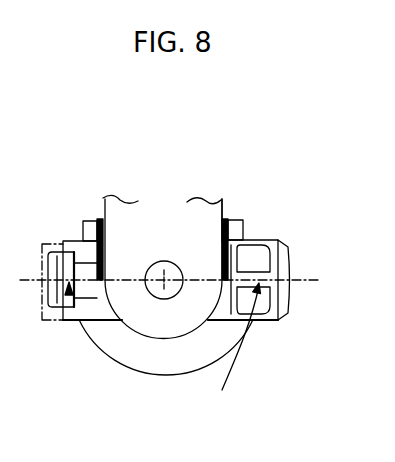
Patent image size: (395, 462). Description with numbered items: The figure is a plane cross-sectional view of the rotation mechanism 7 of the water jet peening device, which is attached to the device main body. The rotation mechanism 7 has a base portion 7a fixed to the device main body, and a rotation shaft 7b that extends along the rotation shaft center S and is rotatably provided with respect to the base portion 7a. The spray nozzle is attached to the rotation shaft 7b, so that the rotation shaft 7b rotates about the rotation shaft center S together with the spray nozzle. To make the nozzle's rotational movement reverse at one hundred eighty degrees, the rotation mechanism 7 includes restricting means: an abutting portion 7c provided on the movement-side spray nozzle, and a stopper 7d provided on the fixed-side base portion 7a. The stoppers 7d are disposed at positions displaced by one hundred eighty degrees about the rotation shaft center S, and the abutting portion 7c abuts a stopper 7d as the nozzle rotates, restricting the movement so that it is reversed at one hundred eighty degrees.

The rotation mechanism 7 is at (280, 161).
The base portion 7a is at (222, 205).
The rotation shaft 7b is at (164, 259).
The abutting portion 7c is at (240, 265).
The stopper 7d is at (76, 248).
The rotation shaft center S is at (168, 284).